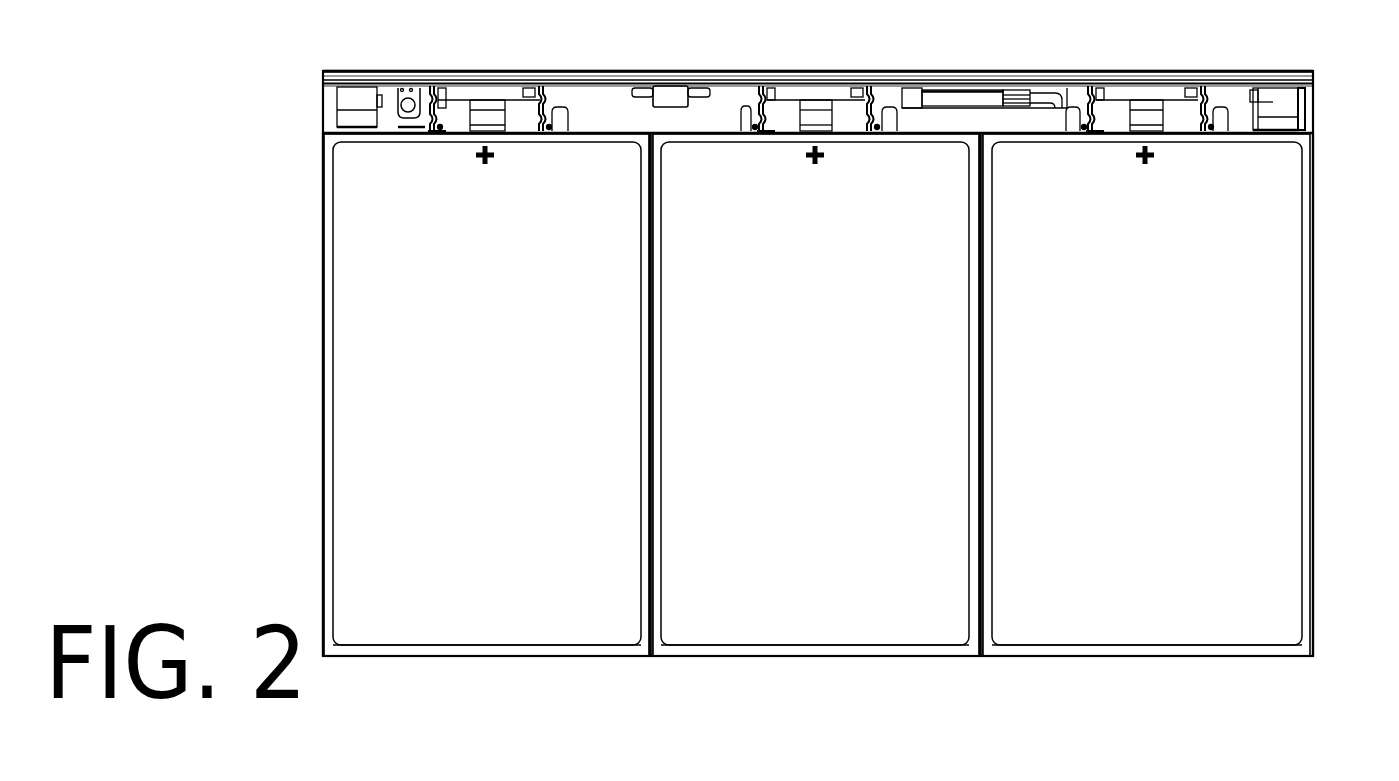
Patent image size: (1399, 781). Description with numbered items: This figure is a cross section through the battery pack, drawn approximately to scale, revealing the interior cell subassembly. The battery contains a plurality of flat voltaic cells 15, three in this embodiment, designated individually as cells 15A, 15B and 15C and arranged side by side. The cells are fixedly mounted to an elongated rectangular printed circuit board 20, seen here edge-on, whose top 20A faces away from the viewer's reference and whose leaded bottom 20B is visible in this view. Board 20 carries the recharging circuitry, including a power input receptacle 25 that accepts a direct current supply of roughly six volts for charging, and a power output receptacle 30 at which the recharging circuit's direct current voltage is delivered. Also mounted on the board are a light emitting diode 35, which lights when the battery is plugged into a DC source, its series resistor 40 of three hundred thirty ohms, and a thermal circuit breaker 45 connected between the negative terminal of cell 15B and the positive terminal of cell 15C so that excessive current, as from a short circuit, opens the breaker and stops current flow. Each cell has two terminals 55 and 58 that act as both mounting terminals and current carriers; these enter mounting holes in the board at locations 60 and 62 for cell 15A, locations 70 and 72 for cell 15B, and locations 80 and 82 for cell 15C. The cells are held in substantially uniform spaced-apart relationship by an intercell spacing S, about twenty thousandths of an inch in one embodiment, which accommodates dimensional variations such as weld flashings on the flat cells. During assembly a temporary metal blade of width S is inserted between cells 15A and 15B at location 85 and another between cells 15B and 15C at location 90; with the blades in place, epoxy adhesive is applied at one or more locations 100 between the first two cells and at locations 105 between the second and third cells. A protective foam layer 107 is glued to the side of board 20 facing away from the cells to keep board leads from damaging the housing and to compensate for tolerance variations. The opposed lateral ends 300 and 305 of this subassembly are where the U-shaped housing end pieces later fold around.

The voltaic cells 15 is at (388, 647).
The first cell 15A is at (475, 293).
The second cell 15B is at (805, 293).
The third cell 15C is at (1135, 293).
The printed circuit board 20 is at (1313, 88).
The board top 20A is at (323, 86).
The board bottom 20B is at (323, 72).
The power input receptacle 25 is at (323, 118).
The power output receptacle 30 is at (1313, 122).
The light emitting diode 35 is at (397, 87).
The resistor 40 is at (678, 90).
The thermal circuit breaker 45 is at (960, 100).
The terminal 55 is at (432, 112).
The terminal 58 is at (553, 128).
The mounting hole location 60 is at (431, 100).
The mounting hole location 62 is at (542, 92).
The mounting hole location 70 is at (764, 92).
The mounting hole location 72 is at (870, 90).
The mounting hole location 80 is at (1092, 95).
The mounting hole location 82 is at (1203, 90).
The spacer blade location 85 is at (652, 517).
The spacer blade location 90 is at (983, 517).
The adhesive locations 100 is at (652, 342).
The adhesive locations 105 is at (983, 342).
The protective foam layer 107 is at (1313, 73).
The lateral end 300 is at (321, 533).
The lateral end 305 is at (1313, 384).
The intercell spacing S is at (695, 243).